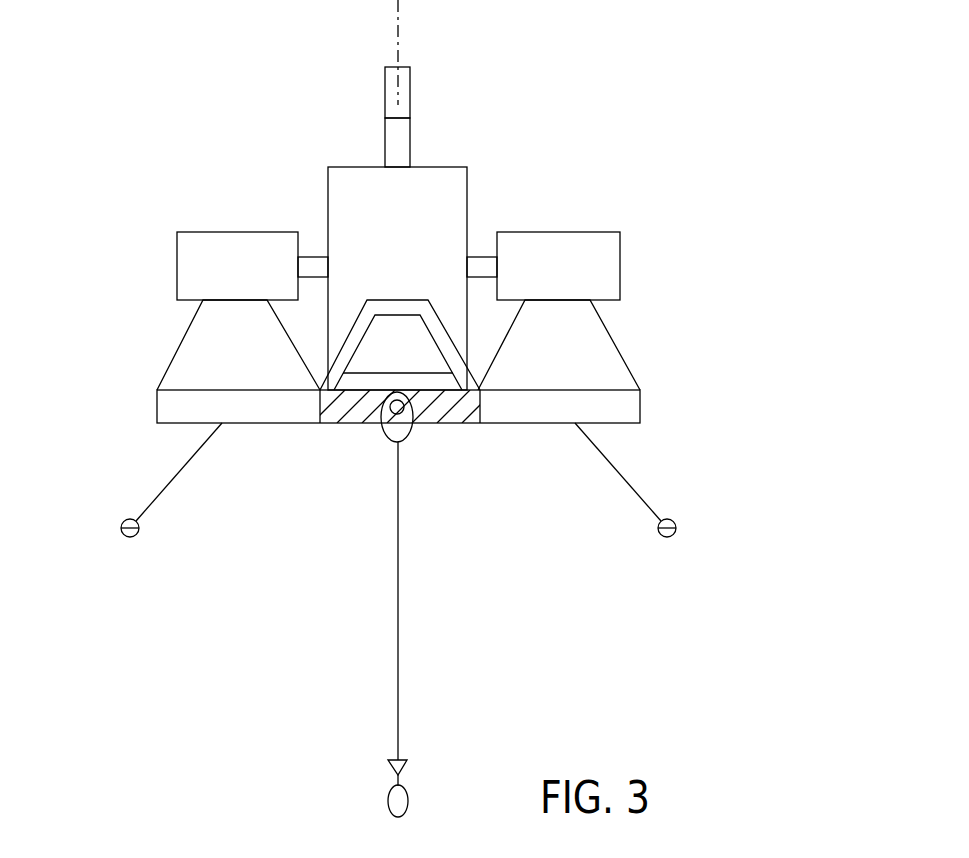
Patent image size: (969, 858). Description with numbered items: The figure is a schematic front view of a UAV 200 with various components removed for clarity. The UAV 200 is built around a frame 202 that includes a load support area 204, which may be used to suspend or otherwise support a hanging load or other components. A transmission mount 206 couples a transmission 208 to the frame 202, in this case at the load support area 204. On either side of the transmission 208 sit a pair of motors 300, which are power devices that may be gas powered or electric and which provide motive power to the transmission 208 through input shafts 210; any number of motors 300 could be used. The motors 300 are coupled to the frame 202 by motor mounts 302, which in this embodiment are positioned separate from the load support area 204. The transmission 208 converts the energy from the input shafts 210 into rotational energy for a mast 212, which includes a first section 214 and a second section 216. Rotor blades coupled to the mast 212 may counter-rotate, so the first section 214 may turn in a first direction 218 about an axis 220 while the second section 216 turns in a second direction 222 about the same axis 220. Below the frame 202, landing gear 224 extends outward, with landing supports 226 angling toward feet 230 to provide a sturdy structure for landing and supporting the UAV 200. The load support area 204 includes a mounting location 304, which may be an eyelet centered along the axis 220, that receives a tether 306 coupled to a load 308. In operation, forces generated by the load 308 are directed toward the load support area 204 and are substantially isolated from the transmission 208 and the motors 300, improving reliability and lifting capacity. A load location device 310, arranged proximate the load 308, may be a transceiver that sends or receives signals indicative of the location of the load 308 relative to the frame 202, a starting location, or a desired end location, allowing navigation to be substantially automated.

The UAV 200 is at (682, 98).
The frame 202 is at (452, 443).
The load support area 204 is at (474, 435).
The transmission mount 206 is at (470, 375).
The transmission 208 is at (468, 170).
The input shafts 210 is at (312, 256).
The mast 212 is at (488, 116).
The first section 214 is at (410, 143).
The second section 216 is at (410, 88).
The first direction 218 is at (367, 125).
The axis 220 is at (398, 43).
The second direction 222 is at (372, 72).
The landing gear 224 is at (398, 495).
The landing supports 226 is at (150, 498).
The feet 230 is at (122, 534).
The motors 300 is at (217, 279).
The motor mounts 302 is at (183, 343).
The mounting location 304 is at (376, 435).
The tether 306 is at (398, 602).
The load 308 is at (390, 798).
The load location device 310 is at (398, 760).